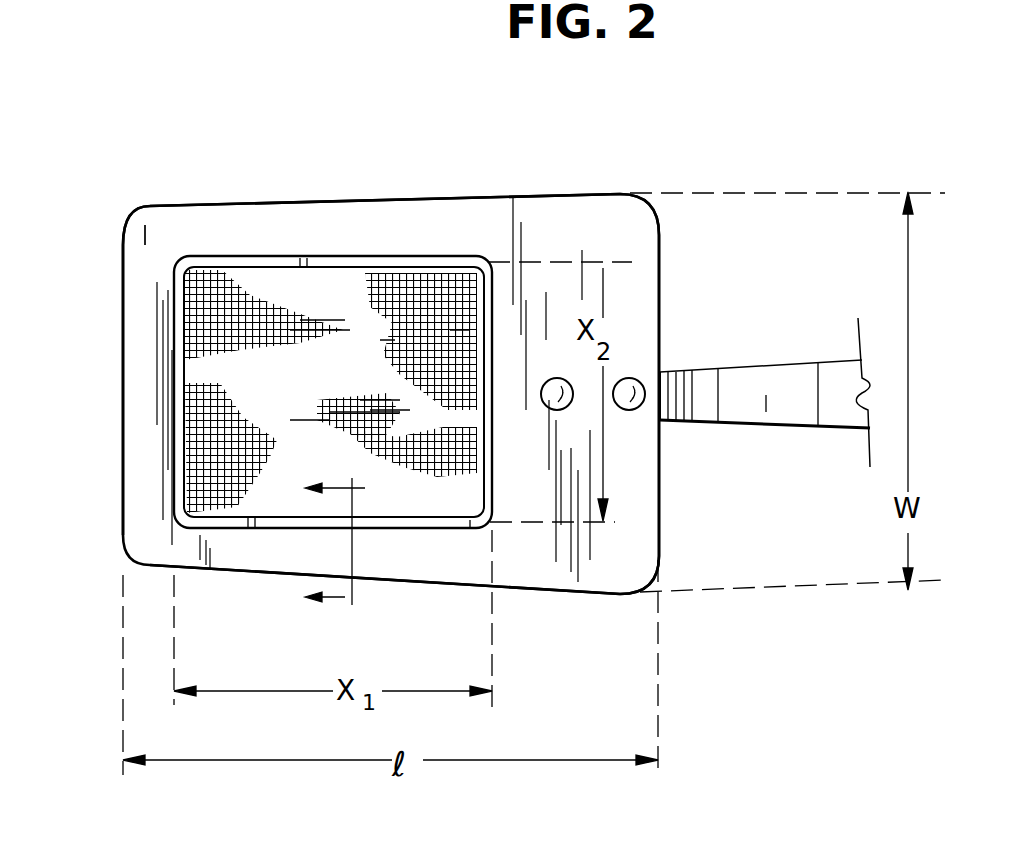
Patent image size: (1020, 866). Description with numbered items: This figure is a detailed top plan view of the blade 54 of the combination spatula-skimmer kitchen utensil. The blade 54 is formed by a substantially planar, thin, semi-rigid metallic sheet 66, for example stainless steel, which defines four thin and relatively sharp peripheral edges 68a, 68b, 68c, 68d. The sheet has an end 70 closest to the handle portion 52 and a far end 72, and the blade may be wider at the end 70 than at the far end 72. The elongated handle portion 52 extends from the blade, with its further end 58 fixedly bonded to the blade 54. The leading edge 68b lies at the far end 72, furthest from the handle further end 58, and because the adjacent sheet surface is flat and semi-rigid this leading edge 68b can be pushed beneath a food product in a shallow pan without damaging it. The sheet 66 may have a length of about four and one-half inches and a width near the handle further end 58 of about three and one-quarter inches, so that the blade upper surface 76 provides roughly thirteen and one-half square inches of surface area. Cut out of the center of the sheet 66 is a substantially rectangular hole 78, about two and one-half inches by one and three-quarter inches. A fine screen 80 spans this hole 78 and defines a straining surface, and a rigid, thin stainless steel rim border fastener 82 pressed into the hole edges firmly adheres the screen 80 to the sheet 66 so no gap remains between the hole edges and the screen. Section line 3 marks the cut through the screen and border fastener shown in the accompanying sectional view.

The blade 54 is at (400, 168).
The far end 72 is at (120, 252).
The sheet 66 is at (605, 218).
The peripheral edge 68a is at (500, 195).
The leading edge 68b is at (122, 392).
The peripheral edge 68c is at (505, 594).
The peripheral edge 68d is at (660, 560).
The end closest to handle 70 is at (660, 297).
The blade upper surface 76 is at (200, 232).
The rim border fastener 82 is at (335, 258).
The screen 80 is at (331, 392).
The hole 78 is at (389, 481).
The handle portion 52 is at (757, 434).
The further end 58 is at (662, 422).
The section line 3- 3 is at (316, 546).